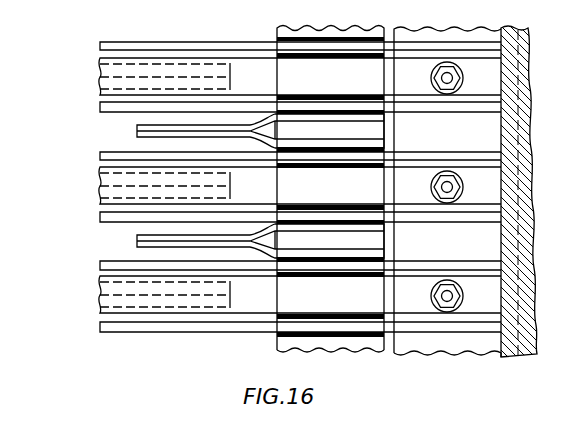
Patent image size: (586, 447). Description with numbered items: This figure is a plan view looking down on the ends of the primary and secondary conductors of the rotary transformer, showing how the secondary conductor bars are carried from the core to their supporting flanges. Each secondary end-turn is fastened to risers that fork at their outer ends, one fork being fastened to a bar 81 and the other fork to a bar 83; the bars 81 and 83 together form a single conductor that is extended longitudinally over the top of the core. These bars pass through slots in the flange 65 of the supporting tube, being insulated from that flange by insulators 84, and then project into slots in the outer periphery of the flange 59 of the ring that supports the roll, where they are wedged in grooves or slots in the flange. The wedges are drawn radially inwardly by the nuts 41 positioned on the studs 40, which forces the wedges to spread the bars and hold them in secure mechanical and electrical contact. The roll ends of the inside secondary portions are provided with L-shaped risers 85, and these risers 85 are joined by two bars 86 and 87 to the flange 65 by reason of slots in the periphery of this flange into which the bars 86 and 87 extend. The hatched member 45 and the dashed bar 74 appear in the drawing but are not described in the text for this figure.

The stud 40 is at (439, 184).
The nut 41 is at (438, 190).
The frame wall 45 is at (482, 188).
The flange 59 is at (538, 235).
The flange 65 is at (333, 350).
The bar 74 is at (100, 172).
The bar 81 is at (100, 265).
The bar 83 is at (100, 217).
The insulator 84 is at (273, 279).
The L-shaped riser 85 is at (137, 128).
The bar 86 is at (387, 121).
The bar 87 is at (387, 139).